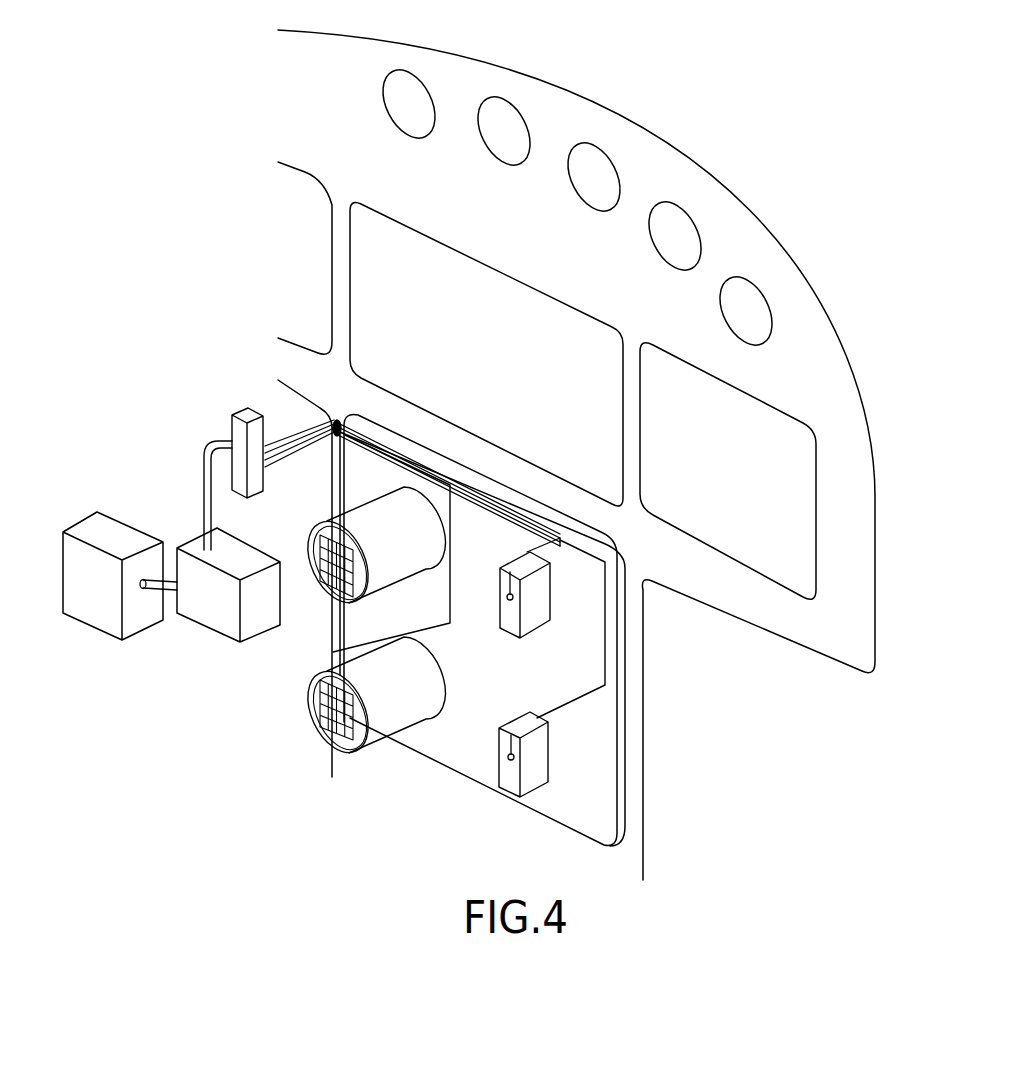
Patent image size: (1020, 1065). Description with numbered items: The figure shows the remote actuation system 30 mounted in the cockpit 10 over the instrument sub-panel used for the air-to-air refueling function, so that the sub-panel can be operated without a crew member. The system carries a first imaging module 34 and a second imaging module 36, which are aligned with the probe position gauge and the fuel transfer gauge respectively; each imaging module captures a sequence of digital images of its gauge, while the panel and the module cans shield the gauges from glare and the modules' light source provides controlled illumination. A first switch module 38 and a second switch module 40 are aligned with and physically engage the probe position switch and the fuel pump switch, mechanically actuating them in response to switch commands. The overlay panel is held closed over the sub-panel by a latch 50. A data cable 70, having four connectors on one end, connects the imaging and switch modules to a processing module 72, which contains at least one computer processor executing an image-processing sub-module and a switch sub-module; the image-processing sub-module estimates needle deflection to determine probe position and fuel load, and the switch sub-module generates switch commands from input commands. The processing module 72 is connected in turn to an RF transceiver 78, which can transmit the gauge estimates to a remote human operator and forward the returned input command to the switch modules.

The cockpit 10 is at (788, 85).
The remote actuation system 30 is at (171, 526).
The first imaging module 34 is at (365, 565).
The second imaging module 36 is at (333, 680).
The first switch module 38 is at (513, 583).
The second switch module 40 is at (506, 752).
The latch 50 is at (610, 712).
The data cable 70 is at (338, 421).
The processing module 72 is at (212, 623).
The RF transceiver 78 is at (133, 612).